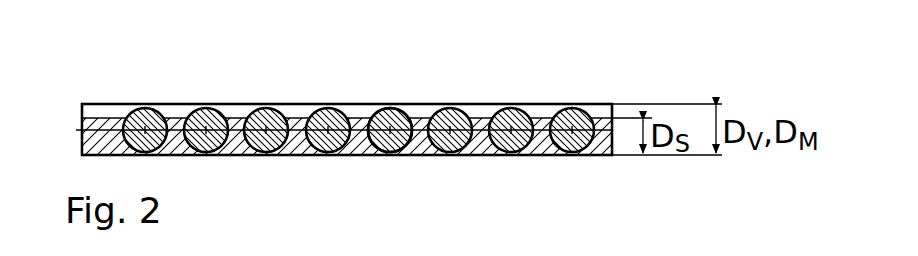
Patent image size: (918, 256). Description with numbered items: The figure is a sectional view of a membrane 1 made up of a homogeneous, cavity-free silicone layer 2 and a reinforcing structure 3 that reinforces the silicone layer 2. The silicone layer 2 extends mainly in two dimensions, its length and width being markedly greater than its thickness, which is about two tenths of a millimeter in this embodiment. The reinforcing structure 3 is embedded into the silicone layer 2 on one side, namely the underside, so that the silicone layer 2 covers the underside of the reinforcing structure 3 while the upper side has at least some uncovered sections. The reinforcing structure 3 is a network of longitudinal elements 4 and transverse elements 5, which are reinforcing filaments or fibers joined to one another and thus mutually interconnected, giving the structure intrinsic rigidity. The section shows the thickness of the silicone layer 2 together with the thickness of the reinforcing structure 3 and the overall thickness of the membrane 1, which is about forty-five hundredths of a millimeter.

The membrane 1 is at (344, 77).
The silicone layer 2 is at (100, 112).
The reinforcing structure 3 is at (394, 102).
The longitudinal elements 4 is at (181, 112).
The transverse elements 5 is at (329, 106).